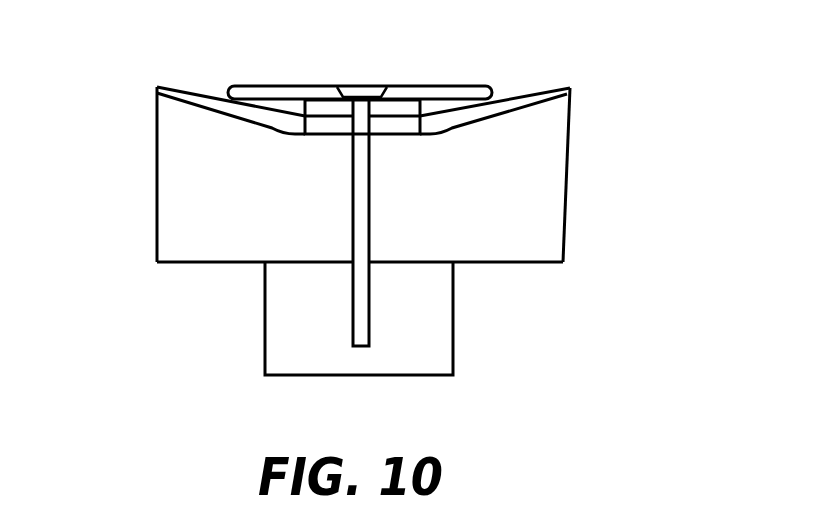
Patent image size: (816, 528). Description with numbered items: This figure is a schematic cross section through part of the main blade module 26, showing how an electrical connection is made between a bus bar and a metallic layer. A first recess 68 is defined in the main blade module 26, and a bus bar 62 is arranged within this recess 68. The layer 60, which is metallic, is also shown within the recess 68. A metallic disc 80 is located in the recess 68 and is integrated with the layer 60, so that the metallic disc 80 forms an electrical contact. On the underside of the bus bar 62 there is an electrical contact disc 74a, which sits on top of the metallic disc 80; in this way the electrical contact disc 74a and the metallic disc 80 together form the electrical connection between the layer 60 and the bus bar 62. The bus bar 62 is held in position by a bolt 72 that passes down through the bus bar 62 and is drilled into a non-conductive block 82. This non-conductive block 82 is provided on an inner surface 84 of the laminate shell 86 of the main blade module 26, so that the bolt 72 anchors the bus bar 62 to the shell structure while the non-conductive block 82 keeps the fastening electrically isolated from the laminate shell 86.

The main blade module 26 is at (575, 195).
The layer 60 is at (528, 90).
The bus bar 62 is at (414, 88).
The first recess 68 is at (470, 128).
The bolt 72 is at (359, 214).
The electrical contact disc 74a is at (322, 105).
The metallic disc 80 is at (322, 128).
The non-conductive block 82 is at (432, 327).
The inner surface 84 is at (198, 265).
The laminate shell 86 is at (178, 177).